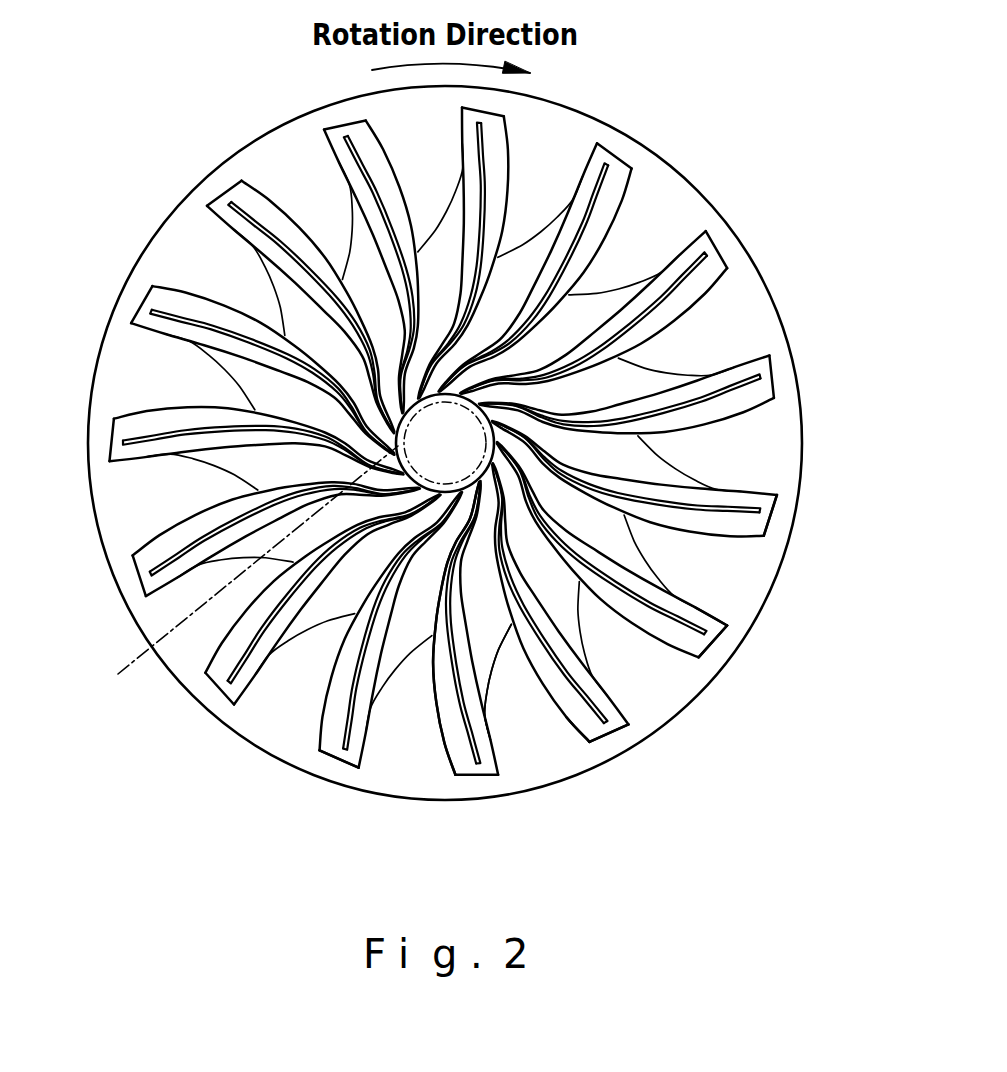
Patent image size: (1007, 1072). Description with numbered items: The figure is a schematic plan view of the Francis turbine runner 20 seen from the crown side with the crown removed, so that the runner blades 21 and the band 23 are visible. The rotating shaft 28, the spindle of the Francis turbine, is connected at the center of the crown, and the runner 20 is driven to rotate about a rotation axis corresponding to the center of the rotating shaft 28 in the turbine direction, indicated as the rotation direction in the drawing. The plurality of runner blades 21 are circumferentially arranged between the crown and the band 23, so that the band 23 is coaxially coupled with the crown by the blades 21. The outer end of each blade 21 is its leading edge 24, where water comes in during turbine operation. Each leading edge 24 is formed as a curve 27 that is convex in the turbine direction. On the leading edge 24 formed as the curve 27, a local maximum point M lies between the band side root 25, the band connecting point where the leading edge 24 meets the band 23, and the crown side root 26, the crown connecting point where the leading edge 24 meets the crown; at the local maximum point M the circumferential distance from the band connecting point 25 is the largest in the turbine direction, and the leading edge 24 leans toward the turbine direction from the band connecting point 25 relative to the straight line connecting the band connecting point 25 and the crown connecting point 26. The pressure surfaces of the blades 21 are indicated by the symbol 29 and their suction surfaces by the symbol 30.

The Francis turbine runner 20 is at (638, 118).
The runner blade 21 is at (694, 383).
The band 23 is at (282, 162).
The leading edge 24 is at (595, 747).
The band side root 25 is at (724, 627).
The crown side root 26 is at (727, 641).
The curve 27 is at (610, 733).
The rotating shaft 28 is at (233, 581).
The pressure surface 29 is at (472, 703).
The suction surface 30 is at (442, 720).
The local maximum point M is at (763, 537).